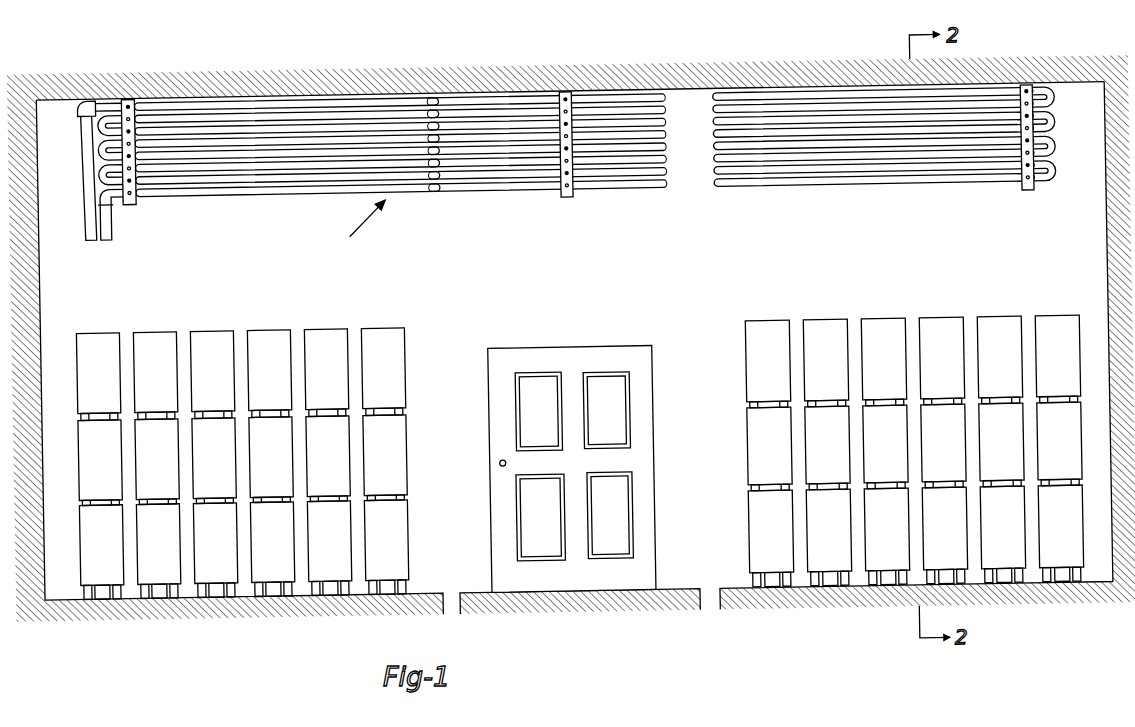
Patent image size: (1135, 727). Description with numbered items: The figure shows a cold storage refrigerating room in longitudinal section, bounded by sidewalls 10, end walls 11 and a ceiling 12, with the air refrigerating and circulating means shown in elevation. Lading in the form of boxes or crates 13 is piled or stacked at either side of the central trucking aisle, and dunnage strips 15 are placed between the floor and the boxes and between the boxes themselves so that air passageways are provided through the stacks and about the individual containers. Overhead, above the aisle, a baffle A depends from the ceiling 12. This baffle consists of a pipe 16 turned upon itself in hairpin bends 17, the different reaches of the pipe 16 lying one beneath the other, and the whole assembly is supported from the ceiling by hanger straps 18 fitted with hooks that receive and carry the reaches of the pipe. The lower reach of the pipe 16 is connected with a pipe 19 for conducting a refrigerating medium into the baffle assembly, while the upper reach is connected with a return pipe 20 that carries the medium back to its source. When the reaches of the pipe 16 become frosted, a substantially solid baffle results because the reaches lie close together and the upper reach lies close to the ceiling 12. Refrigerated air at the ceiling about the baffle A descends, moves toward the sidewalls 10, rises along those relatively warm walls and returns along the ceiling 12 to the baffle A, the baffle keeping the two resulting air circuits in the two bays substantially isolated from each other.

The sidewall 10 is at (694, 564).
The end wall 11 is at (31, 284).
The ceiling 12 is at (72, 83).
The boxes or crates 13 is at (272, 340).
The dunnage strips 15 is at (396, 410).
The pipe 16 is at (895, 188).
The hairpin bends 17 is at (1054, 135).
The hanger straps 18 is at (570, 197).
The pipe 19 is at (110, 220).
The return pipe 20 is at (88, 165).
The baffle A is at (358, 231).